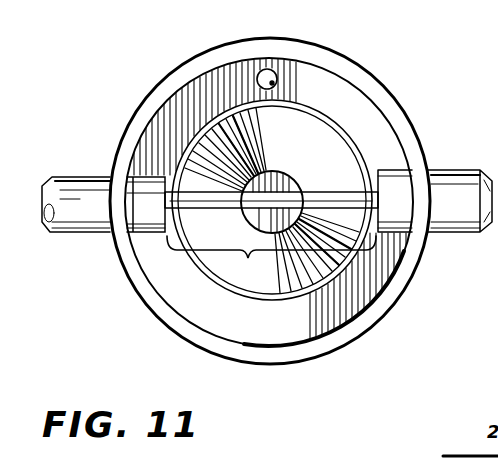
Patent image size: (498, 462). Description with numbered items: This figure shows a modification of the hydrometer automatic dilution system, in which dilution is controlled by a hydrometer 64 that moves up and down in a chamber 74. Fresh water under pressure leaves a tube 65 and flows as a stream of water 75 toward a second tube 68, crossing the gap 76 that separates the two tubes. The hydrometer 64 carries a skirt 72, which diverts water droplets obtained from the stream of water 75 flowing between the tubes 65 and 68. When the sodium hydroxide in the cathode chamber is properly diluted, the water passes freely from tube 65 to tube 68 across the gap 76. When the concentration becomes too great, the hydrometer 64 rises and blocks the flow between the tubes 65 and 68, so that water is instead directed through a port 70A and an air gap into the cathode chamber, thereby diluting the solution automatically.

The hydrometer 64 is at (285, 172).
The tube 65 is at (448, 169).
The tube 68 is at (157, 175).
The port 70A is at (278, 81).
The skirt 72 is at (324, 129).
The chamber 74 is at (400, 94).
The stream of water 75 is at (333, 192).
The gap 76 is at (248, 258).